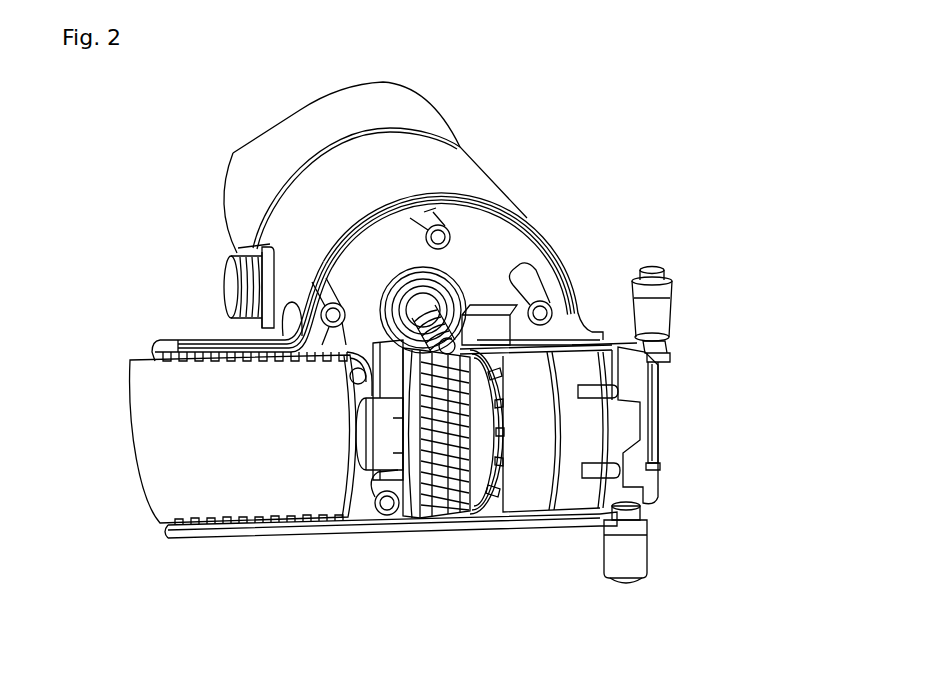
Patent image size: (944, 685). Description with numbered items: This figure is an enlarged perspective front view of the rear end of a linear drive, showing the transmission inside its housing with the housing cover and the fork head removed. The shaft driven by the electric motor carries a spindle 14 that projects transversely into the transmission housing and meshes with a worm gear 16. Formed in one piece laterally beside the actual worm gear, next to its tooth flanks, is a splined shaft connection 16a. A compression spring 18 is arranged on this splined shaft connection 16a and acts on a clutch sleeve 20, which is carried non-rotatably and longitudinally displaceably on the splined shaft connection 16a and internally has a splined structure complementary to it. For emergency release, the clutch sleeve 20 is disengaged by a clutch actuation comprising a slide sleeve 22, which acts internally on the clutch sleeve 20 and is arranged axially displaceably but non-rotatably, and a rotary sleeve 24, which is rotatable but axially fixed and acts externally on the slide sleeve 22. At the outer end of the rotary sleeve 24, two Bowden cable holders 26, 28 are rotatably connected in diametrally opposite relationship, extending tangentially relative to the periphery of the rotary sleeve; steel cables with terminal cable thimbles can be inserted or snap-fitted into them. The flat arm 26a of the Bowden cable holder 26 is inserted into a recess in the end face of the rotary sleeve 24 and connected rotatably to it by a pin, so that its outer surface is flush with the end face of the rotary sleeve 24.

The spindle 14 is at (437, 322).
The worm gear 16 is at (408, 469).
The splined shaft connection 16a is at (482, 480).
The compression spring 18 is at (508, 493).
The clutch sleeve 20 is at (537, 492).
The slide sleeve 22 is at (360, 457).
The rotary sleeve 24 is at (645, 470).
The Bowden cable holder 26 is at (668, 297).
The flat arm 26a is at (660, 417).
The Bowden cable holder 28 is at (627, 560).